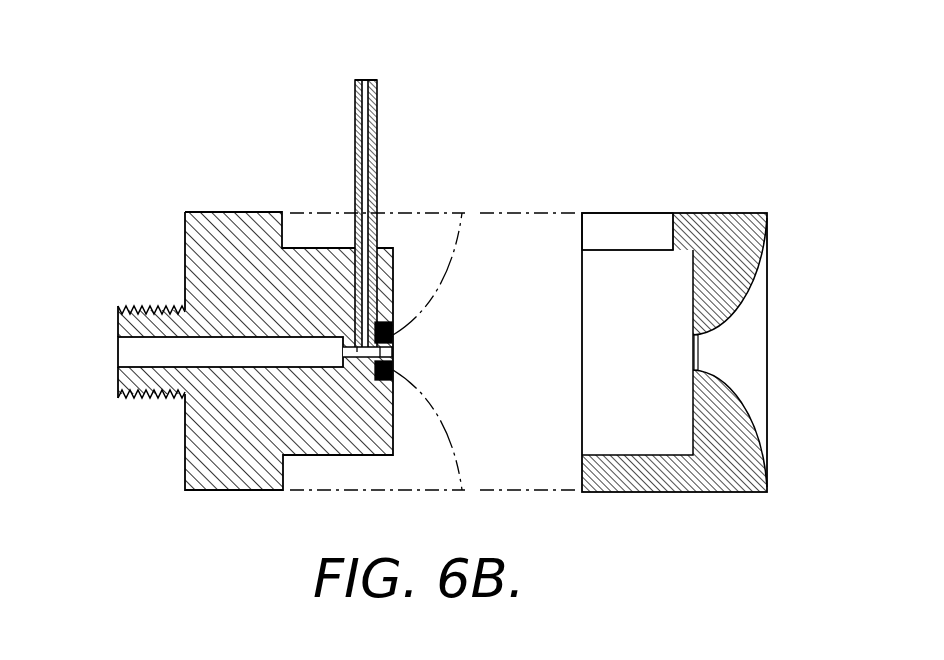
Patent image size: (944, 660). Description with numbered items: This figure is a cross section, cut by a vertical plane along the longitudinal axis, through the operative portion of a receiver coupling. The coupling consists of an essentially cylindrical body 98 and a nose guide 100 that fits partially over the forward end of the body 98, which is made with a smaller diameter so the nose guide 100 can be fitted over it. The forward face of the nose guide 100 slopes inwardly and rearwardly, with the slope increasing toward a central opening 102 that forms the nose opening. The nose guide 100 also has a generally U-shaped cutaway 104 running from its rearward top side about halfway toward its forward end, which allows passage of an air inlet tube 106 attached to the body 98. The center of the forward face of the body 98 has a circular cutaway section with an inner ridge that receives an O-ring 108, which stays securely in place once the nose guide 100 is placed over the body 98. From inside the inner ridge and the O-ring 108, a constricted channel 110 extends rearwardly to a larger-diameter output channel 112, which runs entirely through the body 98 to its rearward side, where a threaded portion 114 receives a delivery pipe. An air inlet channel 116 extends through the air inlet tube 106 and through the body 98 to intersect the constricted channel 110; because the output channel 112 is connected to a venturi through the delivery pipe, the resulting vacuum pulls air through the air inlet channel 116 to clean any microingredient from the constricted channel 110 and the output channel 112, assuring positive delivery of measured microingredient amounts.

The body 98 is at (215, 223).
The nose guide 100 is at (722, 220).
The central opening 102 is at (700, 352).
The cutaway 104 is at (638, 228).
The air inlet tube 106 is at (356, 150).
The O-ring 108 is at (393, 357).
The constricted channel 110 is at (362, 358).
The output channel 112 is at (125, 357).
The threaded portion 114 is at (160, 307).
The air inlet channel 116 is at (356, 80).